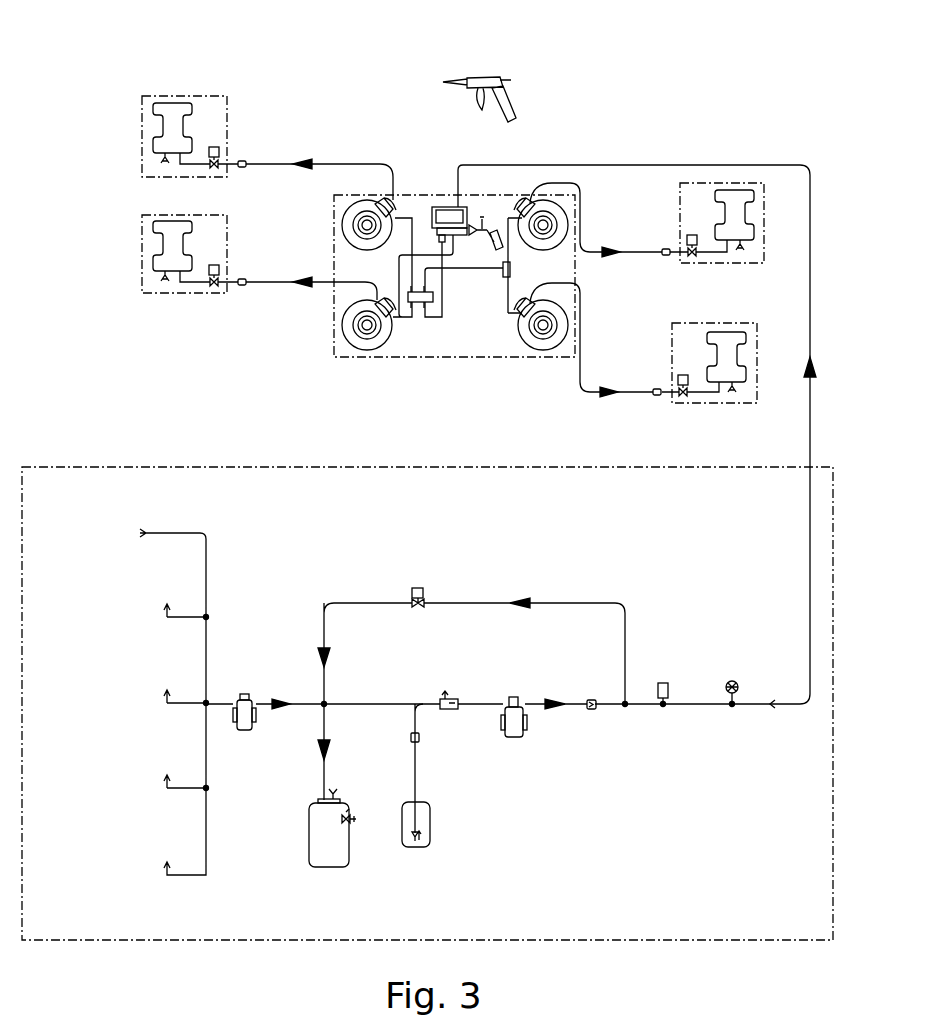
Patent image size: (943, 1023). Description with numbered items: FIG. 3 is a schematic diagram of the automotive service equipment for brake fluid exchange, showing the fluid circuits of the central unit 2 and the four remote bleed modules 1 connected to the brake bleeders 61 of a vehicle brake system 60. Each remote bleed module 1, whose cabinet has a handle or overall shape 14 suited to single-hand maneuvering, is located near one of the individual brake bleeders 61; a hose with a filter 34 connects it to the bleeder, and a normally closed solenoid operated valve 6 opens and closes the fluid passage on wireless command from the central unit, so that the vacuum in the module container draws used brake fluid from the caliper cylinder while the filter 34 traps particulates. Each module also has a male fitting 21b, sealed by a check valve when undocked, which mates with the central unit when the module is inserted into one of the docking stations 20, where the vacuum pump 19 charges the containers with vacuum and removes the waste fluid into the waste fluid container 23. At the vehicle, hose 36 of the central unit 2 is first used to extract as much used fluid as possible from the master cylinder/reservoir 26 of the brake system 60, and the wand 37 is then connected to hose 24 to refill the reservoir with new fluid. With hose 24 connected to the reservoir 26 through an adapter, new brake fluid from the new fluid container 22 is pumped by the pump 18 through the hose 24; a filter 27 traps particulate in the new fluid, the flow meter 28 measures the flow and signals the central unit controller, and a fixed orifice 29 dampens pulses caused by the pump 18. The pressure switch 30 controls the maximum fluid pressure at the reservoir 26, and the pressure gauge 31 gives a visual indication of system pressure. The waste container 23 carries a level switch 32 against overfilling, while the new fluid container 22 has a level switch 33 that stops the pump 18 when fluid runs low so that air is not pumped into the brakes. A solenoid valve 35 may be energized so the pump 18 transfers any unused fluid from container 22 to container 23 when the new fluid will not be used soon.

The remote bleed module 1 is at (178, 314).
The central unit 2 is at (658, 942).
The solenoid operated valve 6 is at (218, 148).
The cabinet handle and/or overall shape 14 is at (173, 110).
The pump 18 is at (515, 738).
The vacuum pump 19 is at (243, 732).
The docking stations 20 is at (180, 680).
The male fitting 21b is at (160, 158).
The new fluid tank/container 22 is at (432, 818).
The waste fluid tank/container 23 is at (312, 822).
The hose 24 is at (570, 165).
The master cylinder/reservoir 26 is at (447, 207).
The filter 27 is at (422, 738).
The flow meter 28 is at (447, 697).
The fixed orifice 29 is at (590, 700).
The pressure switch 30 is at (662, 682).
The pressure gauge 31 is at (732, 681).
The level switch 32 is at (340, 822).
The level switch 33 is at (412, 840).
The filter 34 is at (243, 168).
The solenoid valve 35 is at (425, 592).
The hose 36 is at (168, 531).
The wand 37 is at (487, 80).
The vehicle brake system 60 is at (442, 378).
The brake bleeder 61 is at (338, 318).